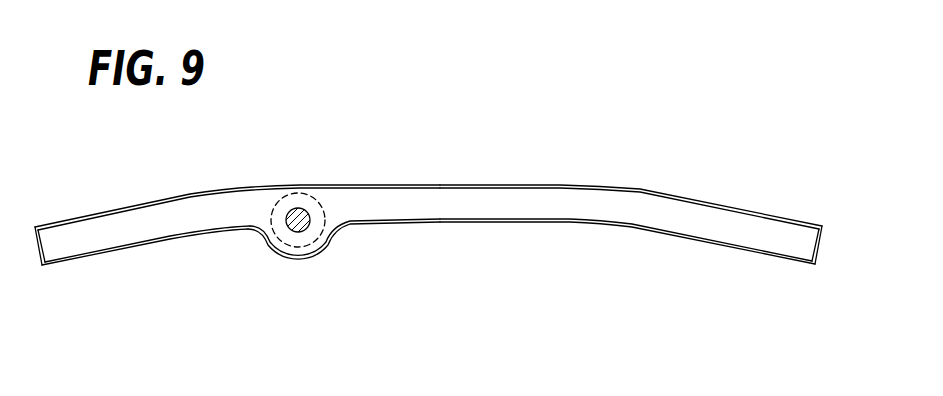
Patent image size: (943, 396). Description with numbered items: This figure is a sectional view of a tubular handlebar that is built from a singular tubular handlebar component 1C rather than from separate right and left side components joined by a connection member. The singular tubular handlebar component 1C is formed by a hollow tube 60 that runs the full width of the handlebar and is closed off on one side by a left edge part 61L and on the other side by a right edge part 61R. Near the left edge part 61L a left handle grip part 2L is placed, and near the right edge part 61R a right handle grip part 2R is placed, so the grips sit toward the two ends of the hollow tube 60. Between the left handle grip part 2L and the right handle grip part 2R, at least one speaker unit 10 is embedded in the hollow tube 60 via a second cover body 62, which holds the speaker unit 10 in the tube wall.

The singular tubular handlebar component 1C is at (449, 140).
The speaker unit 10 is at (293, 210).
The hollow tube 60 is at (533, 185).
The left edge part 61L is at (38, 225).
The right edge part 61R is at (820, 224).
The second cover body 62 is at (302, 247).
The left handle grip part 2L is at (158, 272).
The right handle grip part 2R is at (668, 272).